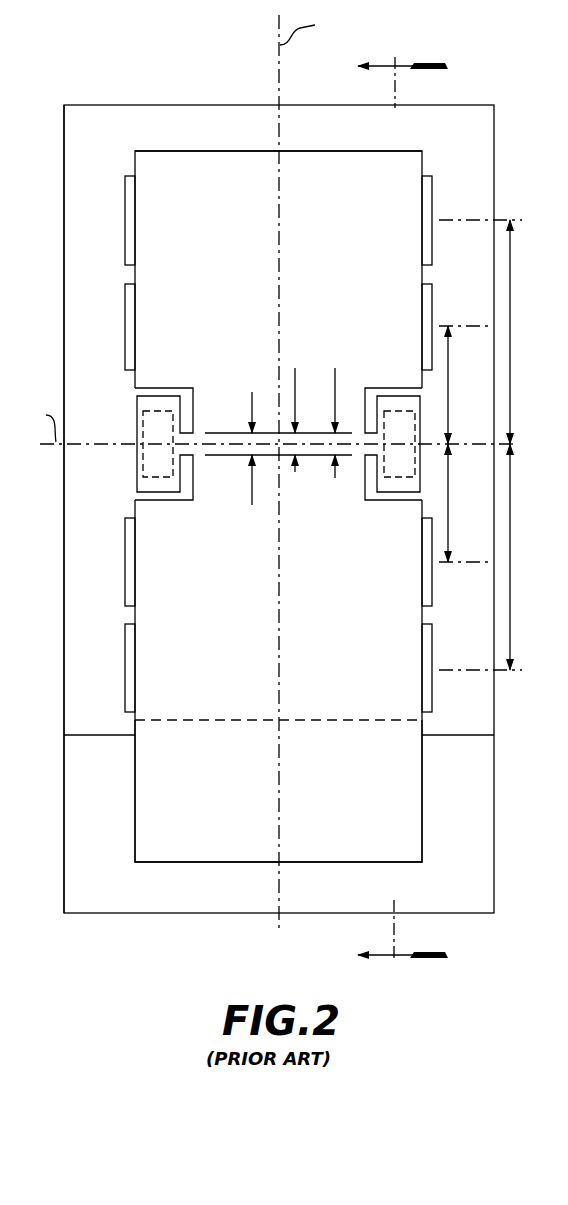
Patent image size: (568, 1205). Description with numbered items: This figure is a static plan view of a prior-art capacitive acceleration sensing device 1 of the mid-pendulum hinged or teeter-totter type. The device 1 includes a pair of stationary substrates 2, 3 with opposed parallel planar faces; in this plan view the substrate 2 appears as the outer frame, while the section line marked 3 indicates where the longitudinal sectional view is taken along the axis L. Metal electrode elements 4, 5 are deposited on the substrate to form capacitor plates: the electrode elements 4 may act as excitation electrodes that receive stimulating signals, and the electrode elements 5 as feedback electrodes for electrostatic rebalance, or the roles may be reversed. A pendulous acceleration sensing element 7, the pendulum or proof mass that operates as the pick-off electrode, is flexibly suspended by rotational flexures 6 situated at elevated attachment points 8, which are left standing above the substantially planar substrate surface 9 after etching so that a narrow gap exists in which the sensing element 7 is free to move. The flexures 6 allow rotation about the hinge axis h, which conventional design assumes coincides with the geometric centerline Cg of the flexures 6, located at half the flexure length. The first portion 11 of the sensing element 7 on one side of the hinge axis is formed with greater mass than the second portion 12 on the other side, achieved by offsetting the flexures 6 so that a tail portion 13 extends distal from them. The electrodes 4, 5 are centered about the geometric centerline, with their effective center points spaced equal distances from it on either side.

The capacitive acceleration sensing device 1 is at (86, 57).
The stationary substrate 2 is at (125, 914).
The stationary substrate 3 is at (393, 512).
The electrode element 4 is at (125, 323).
The electrode element 5 is at (125, 219).
The rotational flexure 6 is at (197, 437).
The pendulous acceleration sensing element 7 is at (134, 503).
The elevated attachment point 8 is at (158, 440).
The substantially planar surface 9 is at (82, 590).
The first portion 11 is at (378, 634).
The second portion 12 is at (392, 299).
The tail portion 13 is at (165, 826).